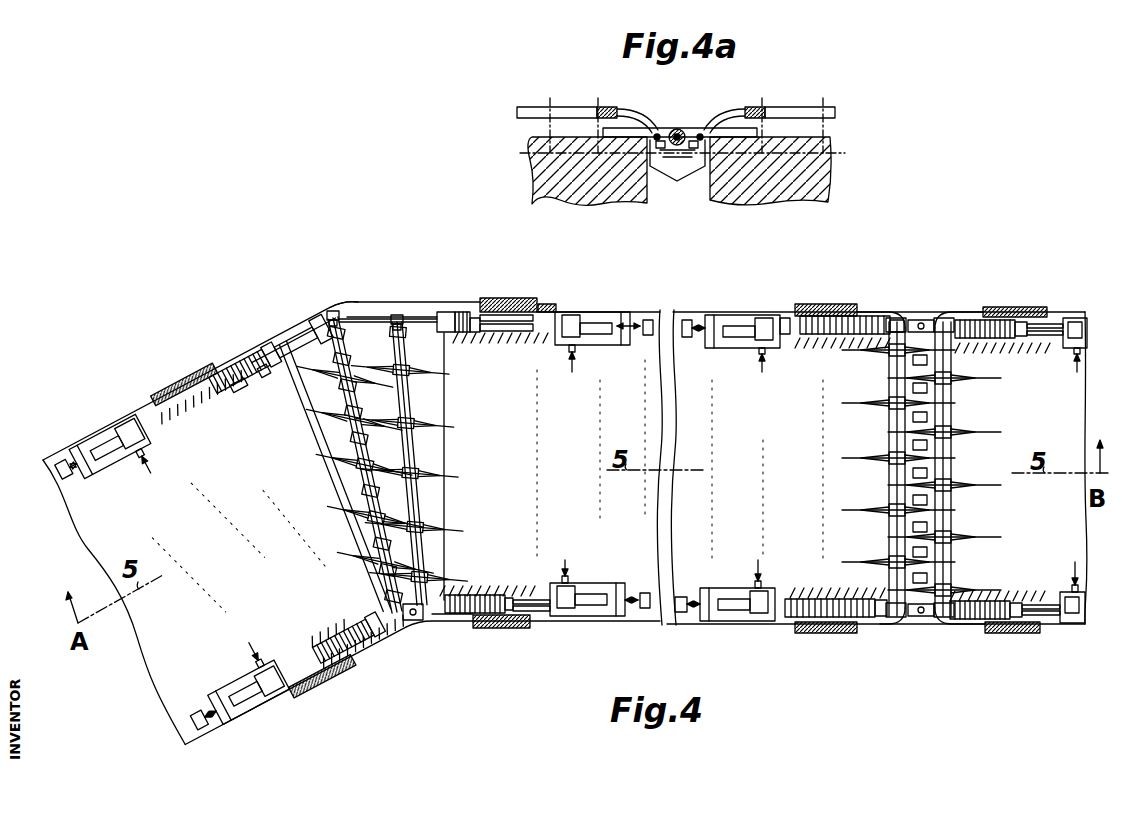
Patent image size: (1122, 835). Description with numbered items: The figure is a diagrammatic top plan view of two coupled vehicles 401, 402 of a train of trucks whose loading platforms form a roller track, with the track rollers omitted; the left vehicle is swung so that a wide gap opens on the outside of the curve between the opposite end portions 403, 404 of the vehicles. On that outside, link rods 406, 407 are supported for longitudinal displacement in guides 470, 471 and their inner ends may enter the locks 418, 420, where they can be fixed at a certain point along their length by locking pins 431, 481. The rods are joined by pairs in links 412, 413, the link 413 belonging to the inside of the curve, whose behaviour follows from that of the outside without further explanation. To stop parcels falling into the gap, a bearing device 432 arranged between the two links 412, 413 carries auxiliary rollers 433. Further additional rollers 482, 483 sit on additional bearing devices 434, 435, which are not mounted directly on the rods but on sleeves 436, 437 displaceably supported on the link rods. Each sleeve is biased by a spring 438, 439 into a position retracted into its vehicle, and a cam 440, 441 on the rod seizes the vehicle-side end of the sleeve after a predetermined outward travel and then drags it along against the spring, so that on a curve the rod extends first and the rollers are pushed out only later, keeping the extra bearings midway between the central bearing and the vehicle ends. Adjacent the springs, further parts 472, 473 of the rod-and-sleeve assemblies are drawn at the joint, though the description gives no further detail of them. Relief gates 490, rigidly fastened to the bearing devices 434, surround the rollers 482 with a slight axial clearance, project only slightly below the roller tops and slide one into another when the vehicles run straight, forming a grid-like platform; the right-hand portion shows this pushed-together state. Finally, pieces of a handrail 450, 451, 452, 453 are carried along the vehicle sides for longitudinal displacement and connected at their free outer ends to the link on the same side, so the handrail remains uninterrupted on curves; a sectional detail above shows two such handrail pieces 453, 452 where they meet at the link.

In FIG. 4, the vehicle 401 is at (573, 517).
In FIG. 4, the vehicle 402 is at (257, 615).
In FIG. 4, the end portion 403 is at (401, 409).
In FIG. 4, the end portion 404 is at (262, 437).
In FIG. 4, the link rod 406 is at (374, 317).
In FIG. 4, the link rod 407 is at (298, 330).
In FIG. 4, the link 412 is at (336, 312).
In FIG. 4, the link 413 is at (412, 620).
In FIG. 4, the lock 418 is at (583, 319).
In FIG. 4, the lock 420 is at (130, 443).
In FIG. 4, the locking pin 431 is at (575, 349).
In FIG. 4, the bearing device 432 is at (336, 367).
In FIG. 4, the auxiliary rollers 433 is at (350, 383).
In FIG. 4, the additional bearing device 434 is at (404, 398).
In FIG. 4, the additional bearing device 435 is at (311, 518).
In FIG. 4, the sleeve 436 is at (412, 320).
In FIG. 4, the sleeve 437 is at (250, 347).
In FIG. 4, the spring 438 is at (456, 333).
In FIG. 4, the spring 439 is at (237, 386).
In FIG. 4, the cam 440 is at (482, 334).
In FIG. 4, the cam 441 is at (222, 397).
In FIG. 4, the handrail piece 450 is at (460, 304).
In FIG. 4, the handrail piece 451 is at (210, 366).
In FIG. 4A, the handrail piece 452 is at (712, 125).
In FIG. 4, the handrail piece 452 is at (947, 315).
In FIG. 4A, the handrail piece 453 is at (638, 125).
In FIG. 4, the handrail piece 453 is at (900, 315).
In FIG. 4, the guide 470 is at (553, 309).
In FIG. 4, the guide 471 is at (145, 408).
In FIG. 4, the plunger 472 is at (444, 331).
In FIG. 4, the plunger 473 is at (248, 385).
In FIG. 4, the locking pin 481 is at (145, 447).
In FIG. 4, the additional rollers 482 is at (423, 409).
In FIG. 4, the additional rollers 483 is at (312, 474).
In FIG. 4, the relief gates 490 is at (443, 424).